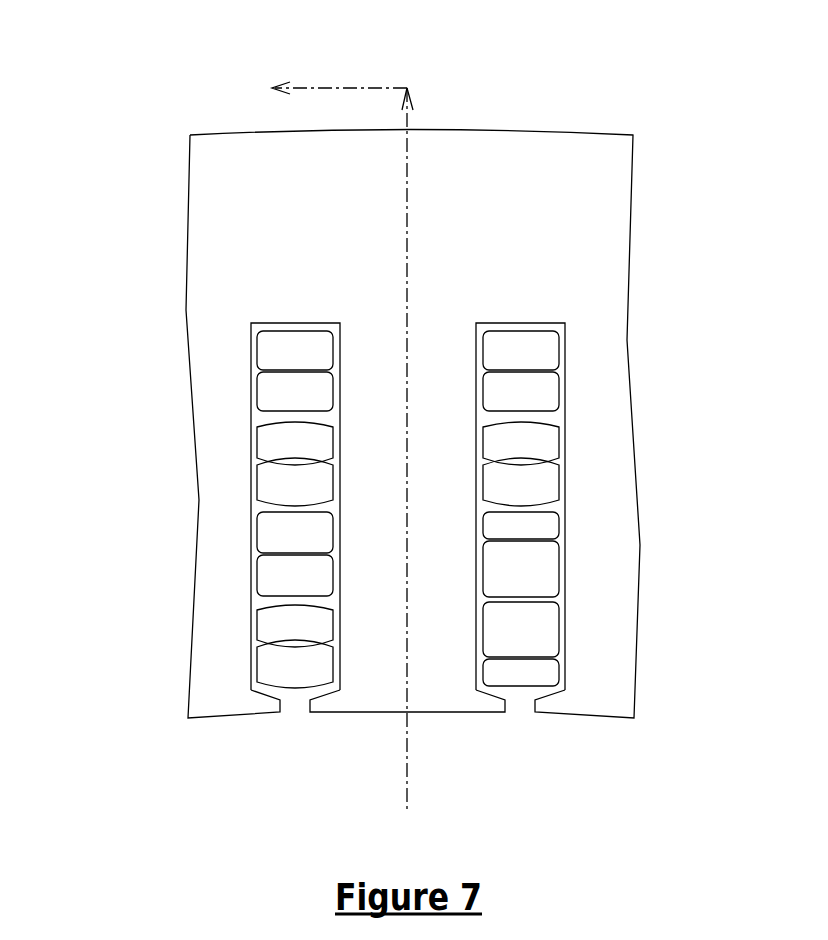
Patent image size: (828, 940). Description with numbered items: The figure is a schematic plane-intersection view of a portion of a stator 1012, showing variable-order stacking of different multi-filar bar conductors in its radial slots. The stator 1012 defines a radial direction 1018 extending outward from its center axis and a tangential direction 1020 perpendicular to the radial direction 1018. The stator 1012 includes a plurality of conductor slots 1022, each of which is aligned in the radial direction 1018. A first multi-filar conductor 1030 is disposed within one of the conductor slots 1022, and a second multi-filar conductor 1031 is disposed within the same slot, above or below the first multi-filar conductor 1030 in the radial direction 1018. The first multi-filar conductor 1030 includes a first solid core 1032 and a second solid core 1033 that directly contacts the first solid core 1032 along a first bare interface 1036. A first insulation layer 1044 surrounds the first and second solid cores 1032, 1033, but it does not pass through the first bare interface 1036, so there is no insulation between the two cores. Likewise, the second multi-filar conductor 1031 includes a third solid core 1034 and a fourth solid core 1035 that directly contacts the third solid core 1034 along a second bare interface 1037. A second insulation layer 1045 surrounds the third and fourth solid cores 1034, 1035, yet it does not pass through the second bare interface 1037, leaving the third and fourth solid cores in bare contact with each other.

The stator 1012 is at (122, 95).
The radial direction 1018 is at (410, 783).
The tangential direction 1020 is at (340, 85).
The conductor slots 1022 is at (258, 356).
The first multi-filar conductor 1030 is at (212, 368).
The second multi-filar conductor 1031 is at (212, 474).
The first solid core 1032 is at (308, 343).
The second solid core 1033 is at (320, 388).
The third solid core 1034 is at (318, 447).
The fourth solid core 1035 is at (318, 483).
The first bare interface 1036 is at (508, 372).
The second bare interface 1037 is at (514, 460).
The first insulation layer 1044 is at (255, 392).
The second insulation layer 1045 is at (255, 455).